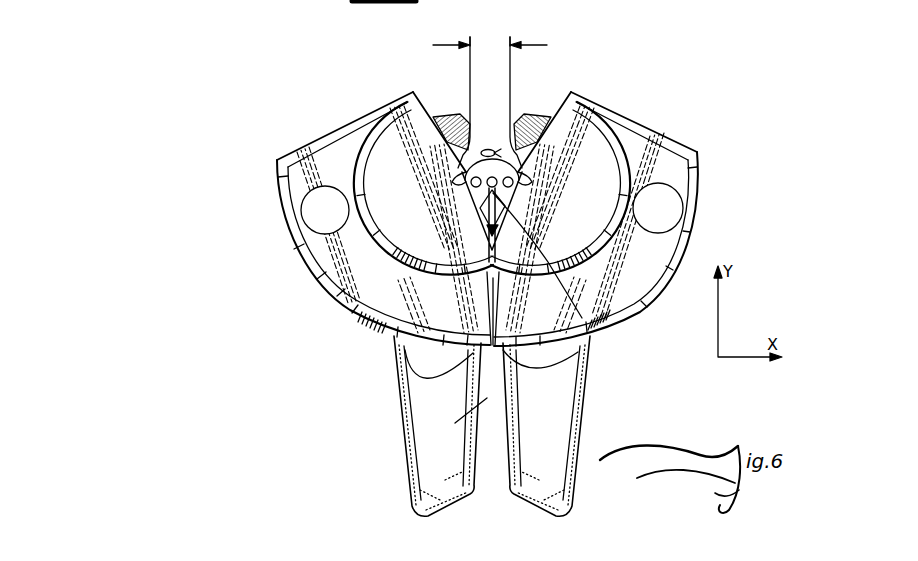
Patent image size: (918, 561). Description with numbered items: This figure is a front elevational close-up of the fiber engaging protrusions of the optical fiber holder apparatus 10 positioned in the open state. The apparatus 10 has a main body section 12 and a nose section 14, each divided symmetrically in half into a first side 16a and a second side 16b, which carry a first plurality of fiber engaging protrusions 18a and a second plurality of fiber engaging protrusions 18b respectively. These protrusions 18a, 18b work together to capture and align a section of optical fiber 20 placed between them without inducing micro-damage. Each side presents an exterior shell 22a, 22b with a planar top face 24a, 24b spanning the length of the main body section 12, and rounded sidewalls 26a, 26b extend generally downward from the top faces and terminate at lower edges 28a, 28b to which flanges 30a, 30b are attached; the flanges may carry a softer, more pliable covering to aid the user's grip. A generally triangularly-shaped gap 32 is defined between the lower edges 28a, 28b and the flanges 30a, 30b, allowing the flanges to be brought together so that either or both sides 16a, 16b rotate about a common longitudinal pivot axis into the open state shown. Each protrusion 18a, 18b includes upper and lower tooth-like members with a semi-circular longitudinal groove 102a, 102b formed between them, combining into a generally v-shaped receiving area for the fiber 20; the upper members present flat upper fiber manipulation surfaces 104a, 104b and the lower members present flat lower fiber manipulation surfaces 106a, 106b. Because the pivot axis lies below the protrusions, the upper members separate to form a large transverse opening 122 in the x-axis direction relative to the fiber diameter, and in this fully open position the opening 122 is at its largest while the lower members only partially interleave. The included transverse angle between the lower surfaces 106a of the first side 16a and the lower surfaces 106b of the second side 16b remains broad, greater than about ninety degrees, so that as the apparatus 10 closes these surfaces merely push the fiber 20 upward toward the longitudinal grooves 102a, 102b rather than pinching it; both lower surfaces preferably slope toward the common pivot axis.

The optical fiber holder apparatus 10 is at (336, 81).
The main body section 12 is at (268, 162).
The nose section 14 is at (378, 105).
The first side 16a is at (270, 186).
The second side 16b is at (716, 150).
The first plurality of fiber engaging protrusions 18a is at (452, 99).
The second plurality of fiber engaging protrusions 18b is at (532, 99).
The optical fiber 20 is at (628, 318).
The exterior shell of first side 22a is at (283, 211).
The exterior shell of second side 22b is at (702, 178).
The planar top face 24a is at (312, 140).
The planar top face 24b is at (668, 138).
The rounded sidewall 26a is at (291, 239).
The rounded sidewall 26b is at (700, 200).
The lower edge 28a is at (425, 372).
The lower edge 28b is at (590, 358).
The flange 30a is at (407, 397).
The flange 30b is at (566, 392).
The triangularly-shaped gap 32 is at (460, 421).
The semi-circular longitudinal groove 102a is at (466, 172).
The semi-circular longitudinal groove 102b is at (577, 102).
The upper fiber manipulation surface 104a is at (470, 124).
The upper fiber manipulation surface 104b is at (512, 124).
The lower fiber manipulation surface 106a is at (453, 152).
The lower fiber manipulation surface 106b is at (578, 132).
The transverse opening 122 is at (484, 44).